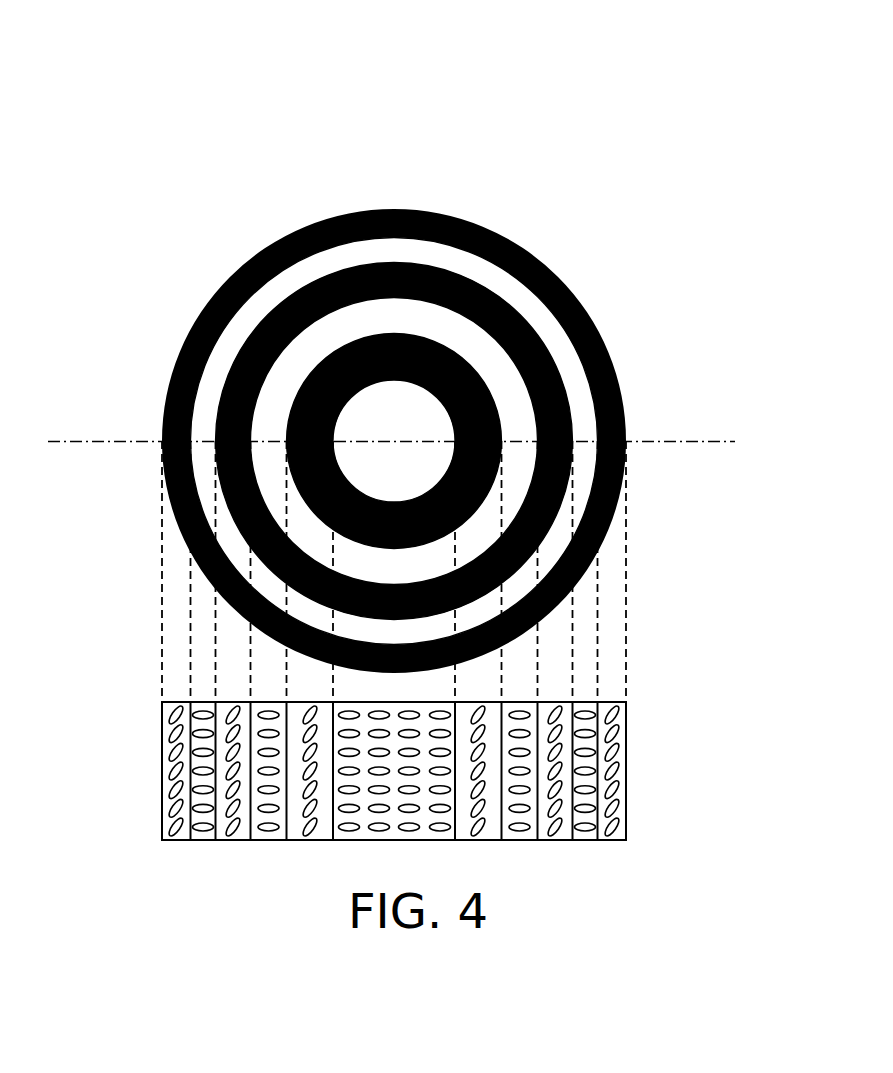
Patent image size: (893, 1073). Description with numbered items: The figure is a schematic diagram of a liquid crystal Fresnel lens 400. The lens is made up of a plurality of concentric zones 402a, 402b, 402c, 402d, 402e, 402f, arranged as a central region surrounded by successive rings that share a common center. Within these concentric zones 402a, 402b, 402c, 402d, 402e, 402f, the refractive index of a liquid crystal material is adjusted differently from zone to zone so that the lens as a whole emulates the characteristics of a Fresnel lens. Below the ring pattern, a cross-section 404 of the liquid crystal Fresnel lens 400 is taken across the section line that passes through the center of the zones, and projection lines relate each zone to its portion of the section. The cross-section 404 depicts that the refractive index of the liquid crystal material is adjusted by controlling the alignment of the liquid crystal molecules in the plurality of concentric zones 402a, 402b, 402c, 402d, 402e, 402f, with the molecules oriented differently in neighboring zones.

The liquid crystal Fresnel lens 400 is at (410, 441).
The concentric zone 402a is at (254, 331).
The concentric zone 402b is at (299, 323).
The concentric zone 402c is at (365, 321).
The concentric zone 402d is at (394, 333).
The concentric zone 402e is at (394, 343).
The concentric zone 402f is at (394, 375).
The cross-section 404 is at (463, 756).